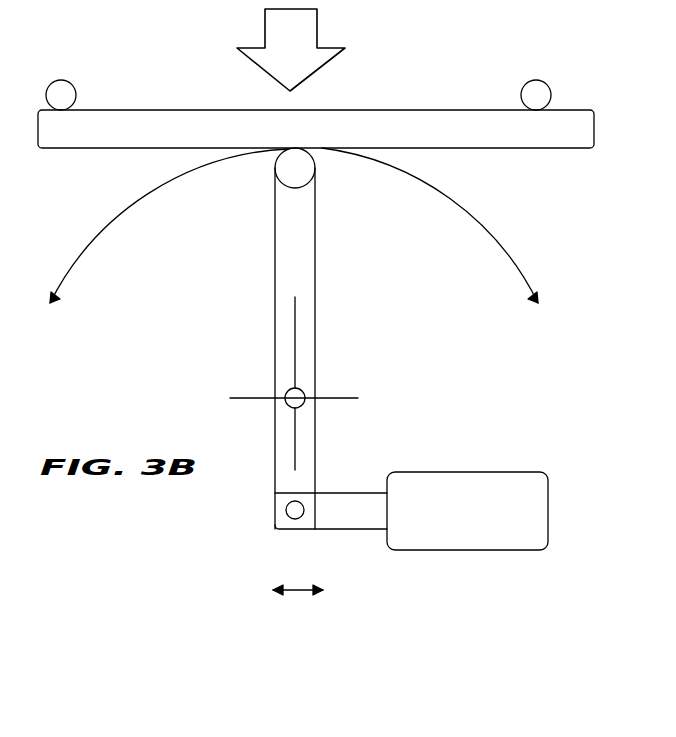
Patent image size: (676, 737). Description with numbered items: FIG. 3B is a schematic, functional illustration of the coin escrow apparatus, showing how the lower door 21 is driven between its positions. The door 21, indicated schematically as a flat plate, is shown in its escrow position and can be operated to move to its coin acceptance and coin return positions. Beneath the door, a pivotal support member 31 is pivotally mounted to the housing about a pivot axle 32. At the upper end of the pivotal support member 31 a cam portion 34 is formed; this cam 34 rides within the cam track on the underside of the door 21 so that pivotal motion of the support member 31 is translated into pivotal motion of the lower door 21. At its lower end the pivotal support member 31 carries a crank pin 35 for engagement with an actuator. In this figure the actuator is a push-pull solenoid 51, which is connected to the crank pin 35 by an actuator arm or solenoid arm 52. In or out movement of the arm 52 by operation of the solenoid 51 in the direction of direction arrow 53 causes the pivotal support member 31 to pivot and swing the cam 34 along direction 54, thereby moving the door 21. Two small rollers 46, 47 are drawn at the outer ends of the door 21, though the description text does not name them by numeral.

The lower door 21 is at (417, 118).
The pivotal support member 31 is at (316, 270).
The pivot axle 32 is at (299, 392).
The cam portion 34 is at (277, 162).
The crank pin 35 is at (299, 503).
The left support roller 46 is at (61, 88).
The right support roller 47 is at (535, 88).
The push-pull solenoid 51 is at (432, 538).
The actuator arm 52 is at (350, 518).
The direction arrow 53 is at (302, 587).
The direction 54 is at (92, 248).